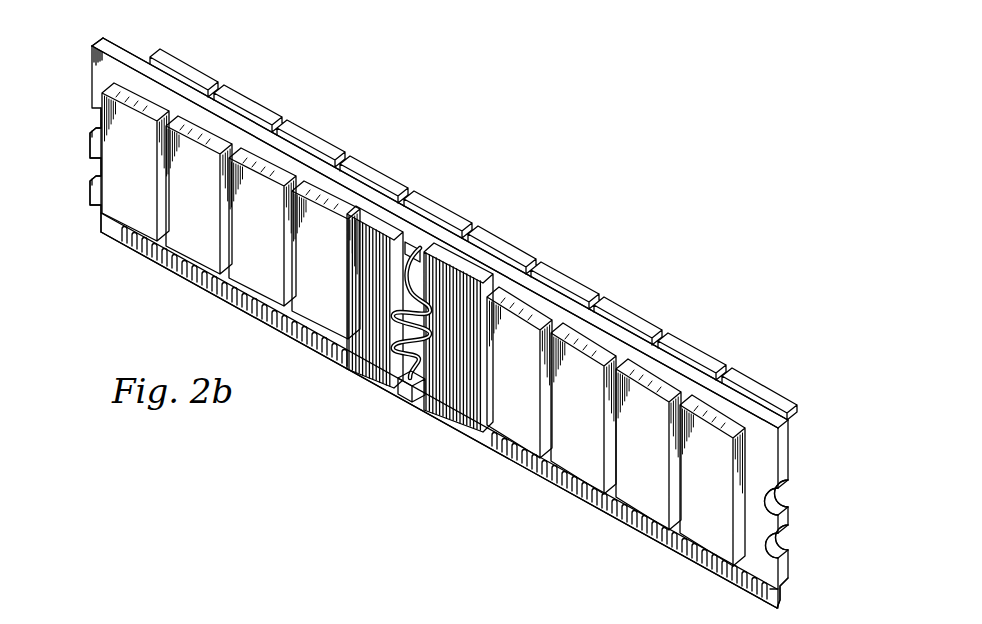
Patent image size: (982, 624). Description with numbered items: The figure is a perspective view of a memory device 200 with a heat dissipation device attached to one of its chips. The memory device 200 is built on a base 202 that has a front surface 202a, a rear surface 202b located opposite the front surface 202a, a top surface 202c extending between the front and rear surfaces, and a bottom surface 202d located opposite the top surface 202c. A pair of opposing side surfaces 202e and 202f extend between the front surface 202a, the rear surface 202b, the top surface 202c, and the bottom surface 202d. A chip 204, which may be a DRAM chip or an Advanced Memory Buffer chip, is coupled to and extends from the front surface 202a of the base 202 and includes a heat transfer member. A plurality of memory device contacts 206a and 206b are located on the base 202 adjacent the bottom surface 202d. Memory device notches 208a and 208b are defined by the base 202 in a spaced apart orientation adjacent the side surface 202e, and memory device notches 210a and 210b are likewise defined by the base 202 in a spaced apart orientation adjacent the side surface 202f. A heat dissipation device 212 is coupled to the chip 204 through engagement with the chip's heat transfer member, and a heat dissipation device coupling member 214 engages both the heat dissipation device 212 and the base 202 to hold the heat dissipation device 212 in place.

The memory device 200 is at (430, 478).
The base 202 is at (309, 360).
The front surface 202a is at (110, 234).
The rear surface 202b is at (630, 324).
The top surface 202c is at (123, 56).
The bottom surface 202d is at (545, 486).
The side surface 202e is at (92, 80).
The side surface 202f is at (787, 572).
The chip 204 is at (487, 297).
The memory device contacts 206a is at (213, 292).
The memory device contacts 206b is at (685, 548).
The memory device notch 208a is at (97, 116).
The memory device notch 208b is at (97, 162).
The memory device notch 210a is at (787, 504).
The memory device notch 210b is at (787, 550).
The heat dissipation device 212 is at (400, 233).
The heat dissipation device coupling member 214 is at (403, 384).